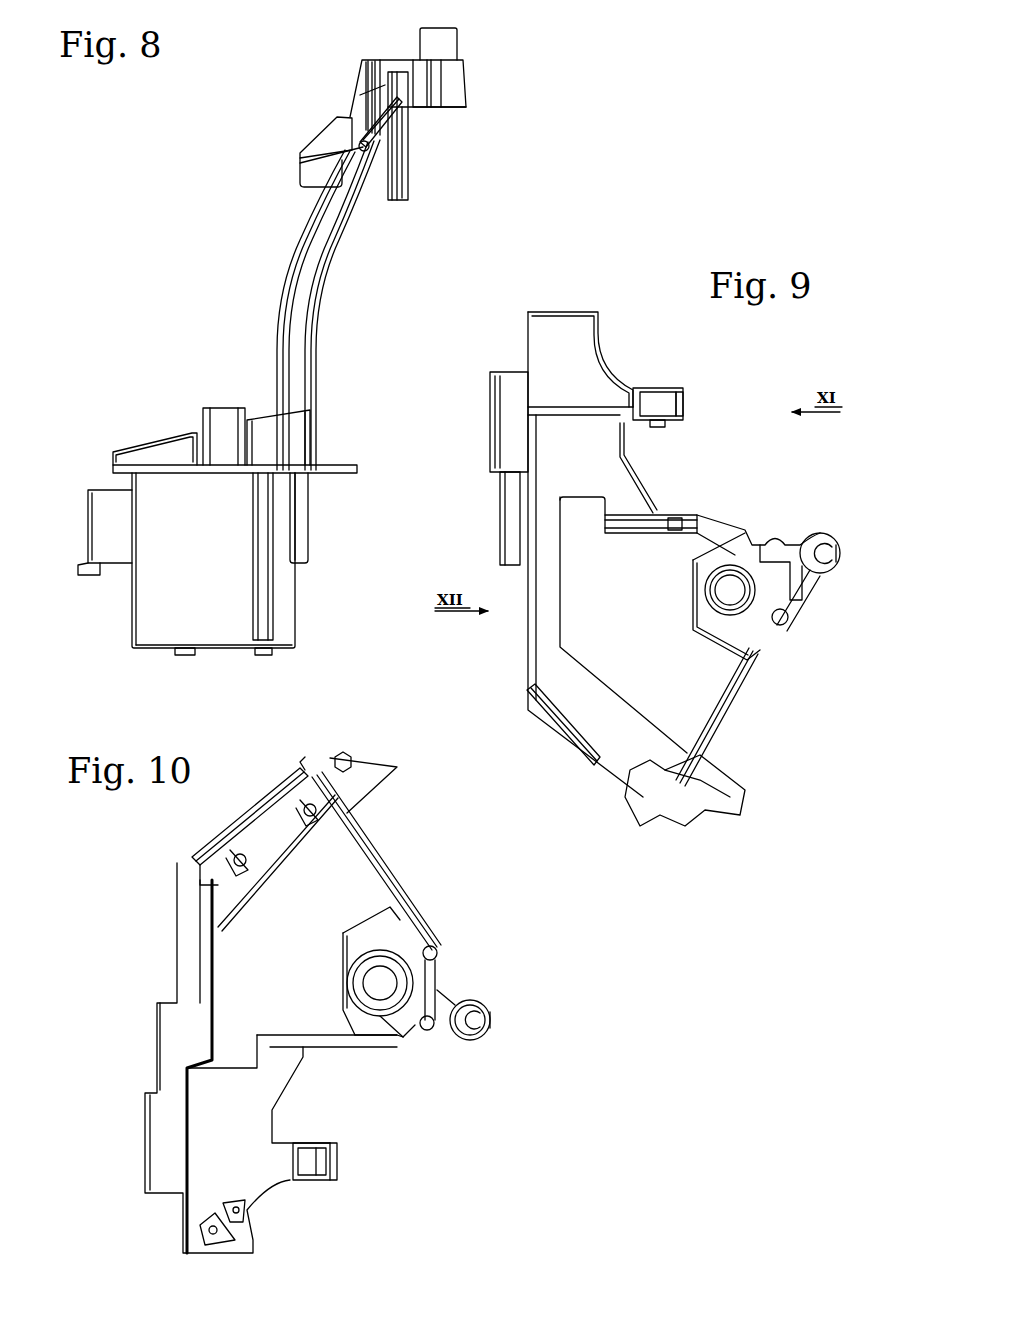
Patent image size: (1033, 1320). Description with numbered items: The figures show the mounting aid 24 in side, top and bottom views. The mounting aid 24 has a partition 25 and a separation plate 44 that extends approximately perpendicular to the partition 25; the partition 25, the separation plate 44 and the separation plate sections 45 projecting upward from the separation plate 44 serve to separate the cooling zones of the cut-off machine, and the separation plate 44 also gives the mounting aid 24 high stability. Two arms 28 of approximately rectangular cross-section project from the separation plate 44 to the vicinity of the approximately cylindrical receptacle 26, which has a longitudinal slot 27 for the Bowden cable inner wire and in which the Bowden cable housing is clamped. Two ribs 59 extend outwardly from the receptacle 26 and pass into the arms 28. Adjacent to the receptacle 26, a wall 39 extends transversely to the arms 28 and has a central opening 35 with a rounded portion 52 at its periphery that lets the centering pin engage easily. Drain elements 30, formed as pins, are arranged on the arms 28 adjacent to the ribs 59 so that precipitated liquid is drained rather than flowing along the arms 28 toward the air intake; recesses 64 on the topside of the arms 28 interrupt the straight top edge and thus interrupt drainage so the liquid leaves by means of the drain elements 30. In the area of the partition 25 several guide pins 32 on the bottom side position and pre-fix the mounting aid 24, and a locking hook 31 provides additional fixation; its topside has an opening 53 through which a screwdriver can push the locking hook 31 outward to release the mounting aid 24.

In FIG. 8, the mounting aid 24 is at (205, 287).
In FIG. 8, the partition 25 is at (160, 595).
In FIG. 10, the partition 25 is at (208, 842).
In FIG. 8, the receptacle 26 is at (452, 58).
In FIG. 9, the receptacle 26 is at (815, 535).
In FIG. 10, the receptacle 26 is at (478, 1002).
In FIG. 9, the slot 27 is at (827, 545).
In FIG. 10, the slot 27 is at (490, 1020).
In FIG. 8, the arms 28 is at (300, 250).
In FIG. 9, the arms 28 is at (677, 520).
In FIG. 10, the arms 28 is at (378, 863).
In FIG. 8, the drain elements 30 is at (400, 189).
In FIG. 10, the drain elements 30 is at (437, 955).
In FIG. 9, the locking hook 31 is at (686, 408).
In FIG. 10, the locking hook 31 is at (340, 1162).
In FIG. 8, the guide pins 32 is at (300, 500).
In FIG. 10, the guide pins 32 is at (345, 752).
In FIG. 9, the opening 35 is at (735, 600).
In FIG. 10, the opening 35 is at (383, 977).
In FIG. 9, the wall 39 is at (737, 553).
In FIG. 10, the wall 39 is at (383, 1017).
In FIG. 9, the separation plate 44 is at (558, 458).
In FIG. 10, the separation plate 44 is at (233, 1117).
In FIG. 8, the separation plate sections 45 is at (167, 450).
In FIG. 9, the separation plate sections 45 is at (560, 727).
In FIG. 9, the rounded portion 52 is at (748, 600).
In FIG. 9, the opening 53 is at (658, 402).
In FIG. 10, the opening 53 is at (312, 1168).
In FIG. 8, the ribs 59 is at (414, 93).
In FIG. 8, the recesses 64 is at (350, 115).